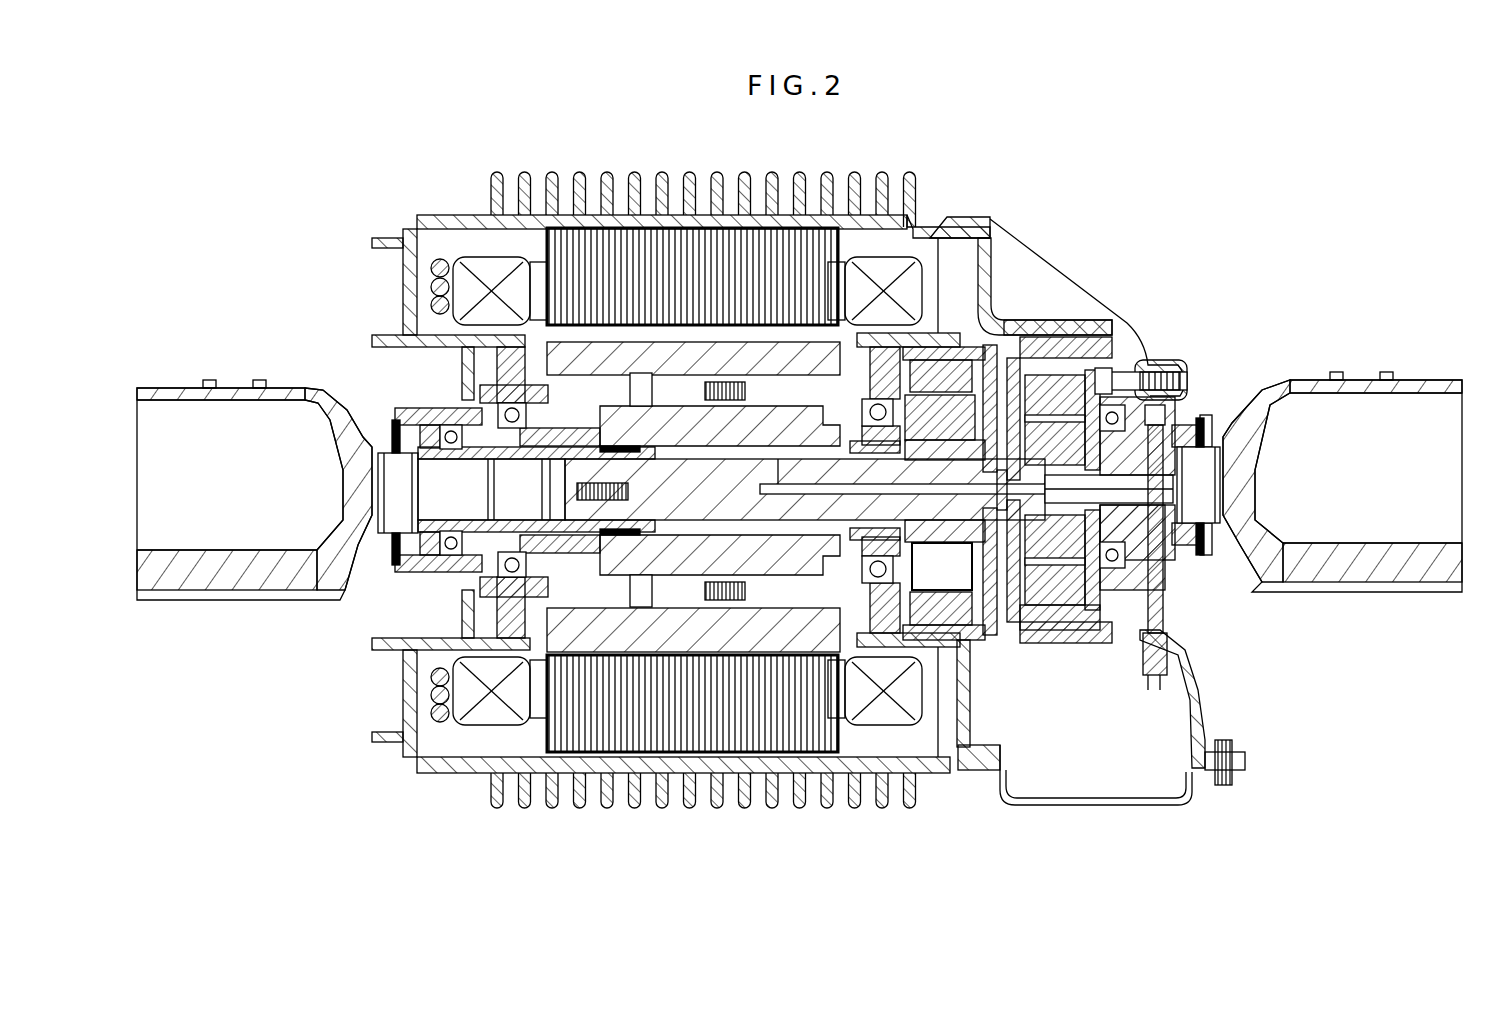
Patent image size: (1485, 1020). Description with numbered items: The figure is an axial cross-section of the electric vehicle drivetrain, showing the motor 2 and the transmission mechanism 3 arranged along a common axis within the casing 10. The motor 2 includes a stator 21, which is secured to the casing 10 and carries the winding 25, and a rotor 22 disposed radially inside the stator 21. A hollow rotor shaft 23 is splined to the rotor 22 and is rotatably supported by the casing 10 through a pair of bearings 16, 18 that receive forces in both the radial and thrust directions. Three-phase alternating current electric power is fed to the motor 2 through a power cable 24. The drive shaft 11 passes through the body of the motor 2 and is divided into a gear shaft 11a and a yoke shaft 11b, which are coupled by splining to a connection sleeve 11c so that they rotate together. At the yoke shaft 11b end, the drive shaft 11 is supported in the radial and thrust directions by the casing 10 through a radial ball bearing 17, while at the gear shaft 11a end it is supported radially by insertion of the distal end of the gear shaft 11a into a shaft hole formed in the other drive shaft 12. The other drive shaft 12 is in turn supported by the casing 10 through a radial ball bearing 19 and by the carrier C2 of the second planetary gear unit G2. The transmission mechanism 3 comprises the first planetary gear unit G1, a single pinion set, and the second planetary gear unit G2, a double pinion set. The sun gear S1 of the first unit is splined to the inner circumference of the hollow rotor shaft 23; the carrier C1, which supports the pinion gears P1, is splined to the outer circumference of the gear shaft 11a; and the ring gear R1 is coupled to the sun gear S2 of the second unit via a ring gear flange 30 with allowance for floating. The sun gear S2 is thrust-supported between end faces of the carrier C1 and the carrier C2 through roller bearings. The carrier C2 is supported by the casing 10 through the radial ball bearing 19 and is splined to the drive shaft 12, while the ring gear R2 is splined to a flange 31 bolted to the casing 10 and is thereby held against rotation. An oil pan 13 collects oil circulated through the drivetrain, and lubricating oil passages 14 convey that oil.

The motor 2 is at (881, 255).
The transmission mechanism 3 is at (1017, 319).
The casing 10 is at (962, 218).
The drive shaft 11 is at (362, 432).
The gear shaft 11a is at (722, 504).
The yoke shaft 11b is at (478, 504).
The connection sleeve 11c is at (455, 418).
The other drive shaft 12 is at (1248, 416).
The oil pan 13 is at (1070, 799).
The lubricating oil passages 14 is at (1155, 685).
The bearing 16 is at (526, 568).
The radial ball bearing 17 is at (410, 430).
The bearing 18 is at (862, 408).
The radial ball bearing 19 is at (1163, 580).
The stator 21 is at (548, 238).
The rotor 22 is at (602, 358).
The hollow rotor shaft 23 is at (610, 555).
The power cable 24 is at (431, 270).
The winding 25 is at (475, 272).
The ring gear flange 30 is at (1005, 628).
The flange 31 is at (1112, 360).
The first planetary gear unit G1 is at (942, 345).
The second planetary gear unit G2 is at (1050, 338).
The pinion gears P1 is at (908, 377).
The sun gear S1 is at (942, 566).
The ring gear R1 is at (968, 622).
The carrier C1 is at (988, 343).
The sun gear S2 is at (1050, 620).
The ring gear R2 is at (1078, 630).
The carrier C2 is at (1110, 612).